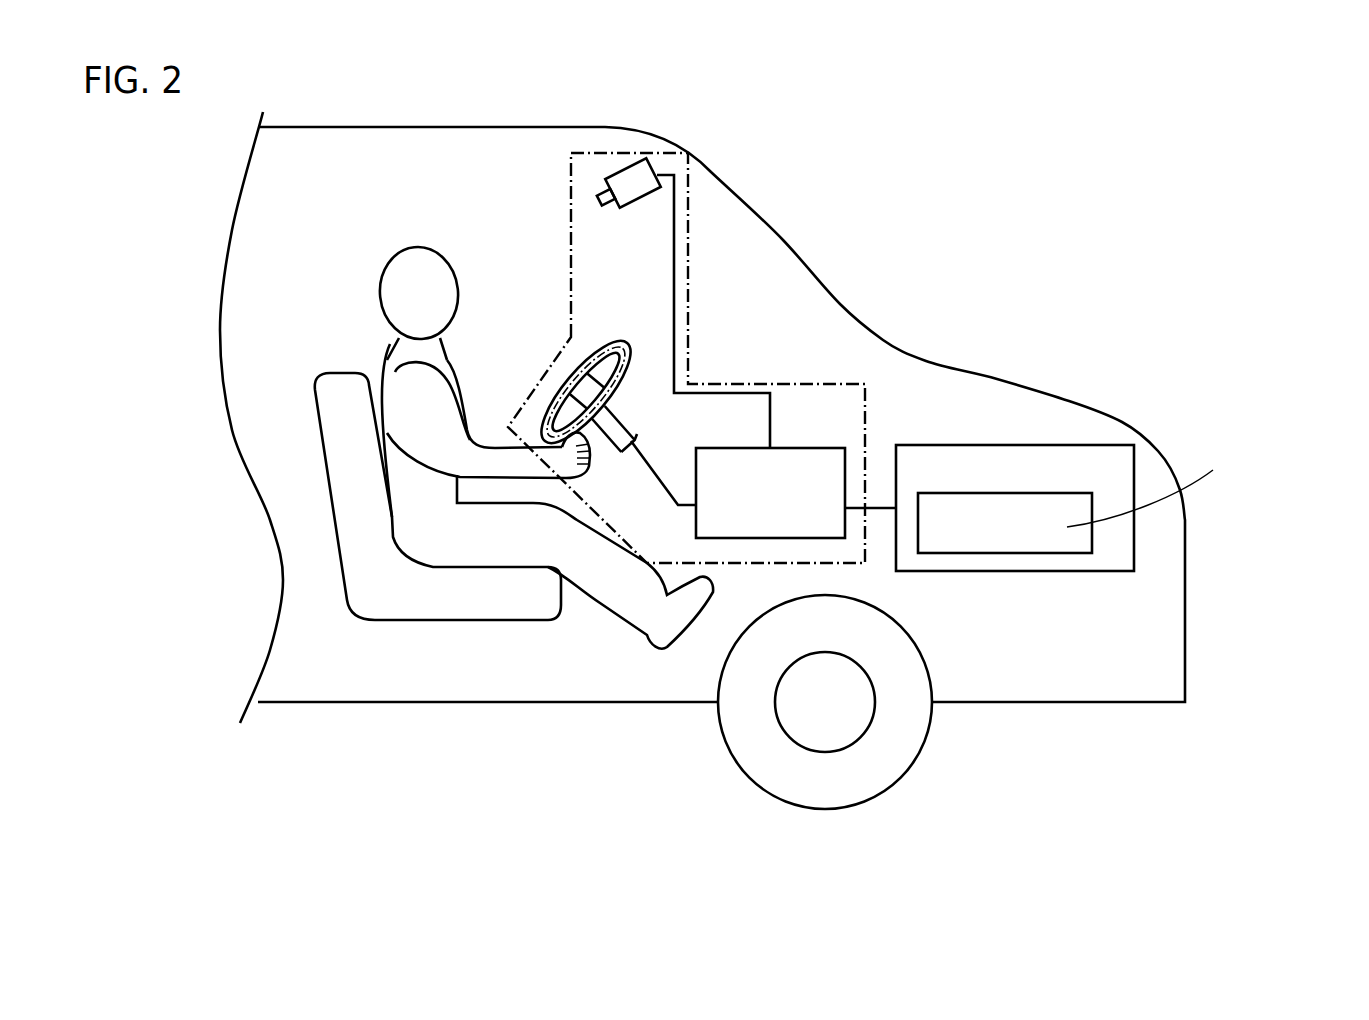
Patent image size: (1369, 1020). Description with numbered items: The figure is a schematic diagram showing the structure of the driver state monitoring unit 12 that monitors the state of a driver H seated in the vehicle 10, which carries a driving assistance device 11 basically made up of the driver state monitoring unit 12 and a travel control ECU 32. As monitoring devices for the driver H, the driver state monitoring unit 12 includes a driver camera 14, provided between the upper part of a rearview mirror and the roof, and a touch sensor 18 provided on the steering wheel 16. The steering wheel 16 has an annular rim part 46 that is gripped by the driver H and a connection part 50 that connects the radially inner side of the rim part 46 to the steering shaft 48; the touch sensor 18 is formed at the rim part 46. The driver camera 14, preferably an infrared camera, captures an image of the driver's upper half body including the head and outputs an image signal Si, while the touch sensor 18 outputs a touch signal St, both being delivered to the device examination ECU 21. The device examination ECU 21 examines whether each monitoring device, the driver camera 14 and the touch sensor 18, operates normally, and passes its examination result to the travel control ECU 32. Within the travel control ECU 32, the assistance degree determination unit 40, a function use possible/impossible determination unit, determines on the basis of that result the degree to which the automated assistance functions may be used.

The vehicle 10 is at (697, 118).
The driving assistance device 11 is at (469, 195).
The driver state monitoring unit 12 is at (571, 235).
The driver camera 14 is at (606, 193).
The steering wheel 16 is at (658, 273).
The touch sensor 18 is at (547, 410).
The device examination ECU 21 is at (795, 448).
The travel control ECU 32 is at (996, 445).
The assistance degree determination unit 40 is at (1003, 553).
The rim part 46 is at (597, 343).
The steering shaft 48 is at (619, 450).
The connection part 50 is at (628, 368).
The driver H is at (385, 262).